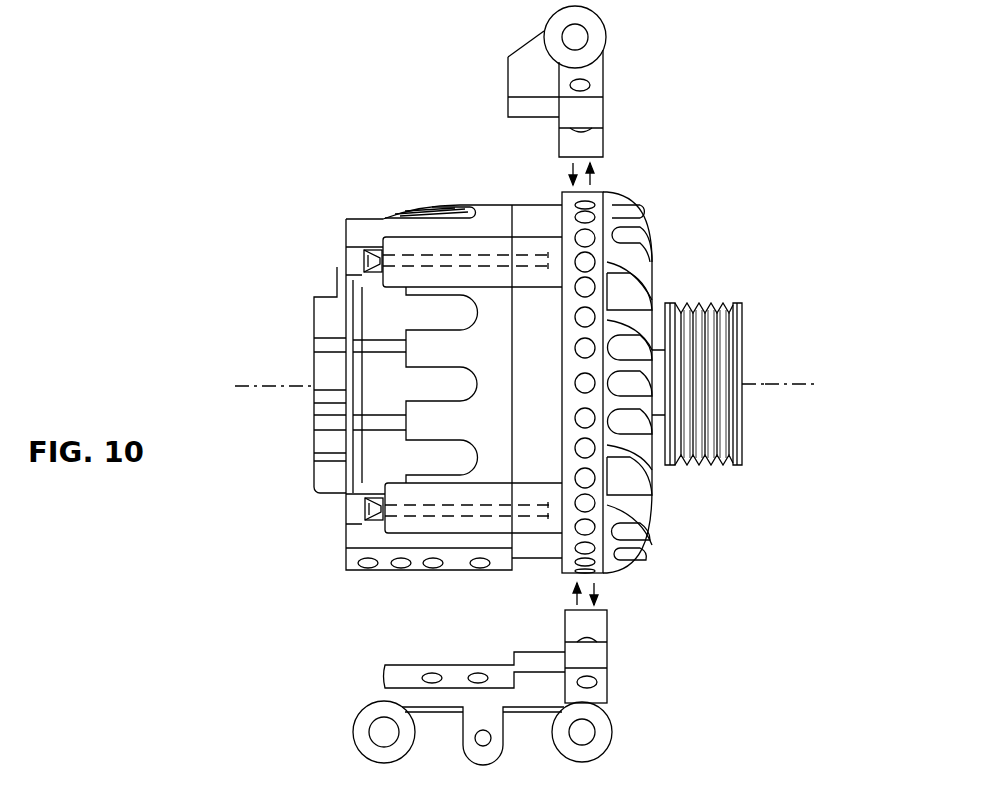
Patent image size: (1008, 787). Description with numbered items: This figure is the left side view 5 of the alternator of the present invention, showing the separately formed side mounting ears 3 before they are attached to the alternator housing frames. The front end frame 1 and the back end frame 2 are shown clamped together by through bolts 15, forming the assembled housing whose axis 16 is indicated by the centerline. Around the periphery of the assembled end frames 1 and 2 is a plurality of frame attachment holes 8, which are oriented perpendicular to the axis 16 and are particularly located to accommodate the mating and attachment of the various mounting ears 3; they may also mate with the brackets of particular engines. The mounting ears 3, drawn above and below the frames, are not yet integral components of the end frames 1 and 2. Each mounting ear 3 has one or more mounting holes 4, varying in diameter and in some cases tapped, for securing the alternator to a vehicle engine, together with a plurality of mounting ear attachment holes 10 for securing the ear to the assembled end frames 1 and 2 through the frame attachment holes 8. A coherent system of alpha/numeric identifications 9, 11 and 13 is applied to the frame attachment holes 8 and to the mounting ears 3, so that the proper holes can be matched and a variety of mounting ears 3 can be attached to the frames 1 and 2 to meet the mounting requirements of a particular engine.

The front end frame 1 is at (640, 265).
The back end frame 2 is at (360, 233).
The mounting ear 3 is at (543, 50).
The mounting hole 4 is at (577, 37).
The left side view 5 is at (680, 500).
The frame attachment hole 8 is at (492, 385).
The identification 9 is at (568, 310).
The mounting ear attachment hole 10 is at (582, 85).
The identification 11 is at (400, 677).
The identification 13 is at (510, 77).
The through bolt 15 is at (365, 261).
The axis 16 is at (300, 386).